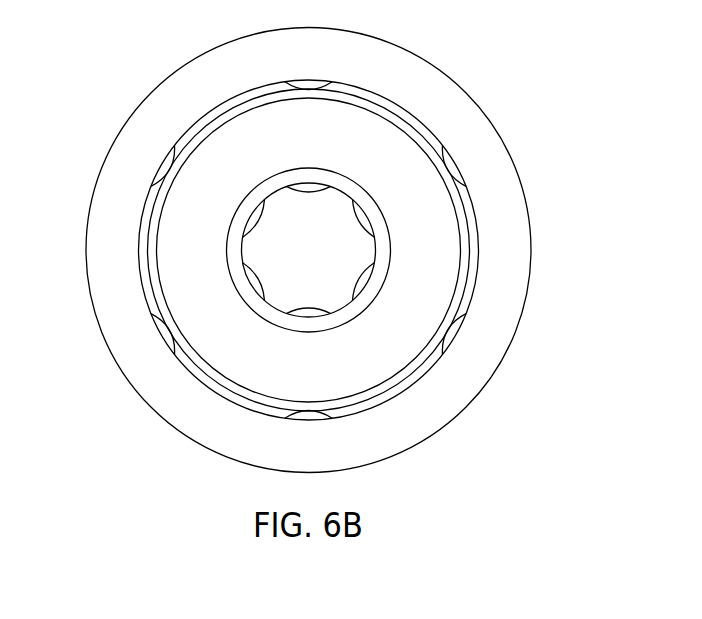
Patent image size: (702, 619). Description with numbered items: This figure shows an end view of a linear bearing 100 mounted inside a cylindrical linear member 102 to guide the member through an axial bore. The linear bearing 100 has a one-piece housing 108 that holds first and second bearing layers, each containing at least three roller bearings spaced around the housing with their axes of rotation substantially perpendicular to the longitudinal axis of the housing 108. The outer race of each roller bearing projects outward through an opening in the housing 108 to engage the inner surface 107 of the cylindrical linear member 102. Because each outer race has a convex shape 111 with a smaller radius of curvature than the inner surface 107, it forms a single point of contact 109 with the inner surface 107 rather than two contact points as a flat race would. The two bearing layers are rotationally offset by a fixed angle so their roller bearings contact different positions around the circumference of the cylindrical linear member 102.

The linear bearing 100 is at (393, 103).
The cylindrical linear member 102 is at (461, 382).
The inner surface 107 is at (217, 108).
The one-piece housing 108 is at (433, 227).
The single point of contact 109 is at (308, 78).
The convex shape 111 is at (307, 197).